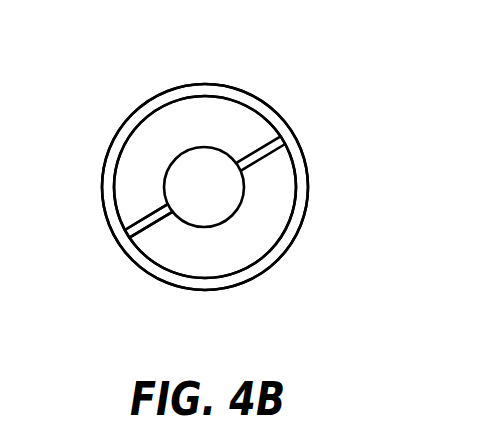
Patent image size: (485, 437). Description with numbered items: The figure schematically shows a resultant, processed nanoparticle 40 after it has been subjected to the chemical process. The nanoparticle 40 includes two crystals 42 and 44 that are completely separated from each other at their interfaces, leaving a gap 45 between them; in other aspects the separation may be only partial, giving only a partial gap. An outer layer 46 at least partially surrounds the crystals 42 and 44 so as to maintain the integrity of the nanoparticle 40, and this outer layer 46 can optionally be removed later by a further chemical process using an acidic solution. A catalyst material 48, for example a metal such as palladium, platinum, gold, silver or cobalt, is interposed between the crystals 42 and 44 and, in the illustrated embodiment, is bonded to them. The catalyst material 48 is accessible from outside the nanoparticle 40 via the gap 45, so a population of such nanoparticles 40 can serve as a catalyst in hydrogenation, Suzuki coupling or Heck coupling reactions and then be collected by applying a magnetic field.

The processed nanoparticle 40 is at (78, 115).
The crystal 42 is at (239, 129).
The crystal 44 is at (228, 262).
The gap 45 is at (275, 148).
The outer layer 46 is at (115, 240).
The catalyst material 48 is at (223, 197).